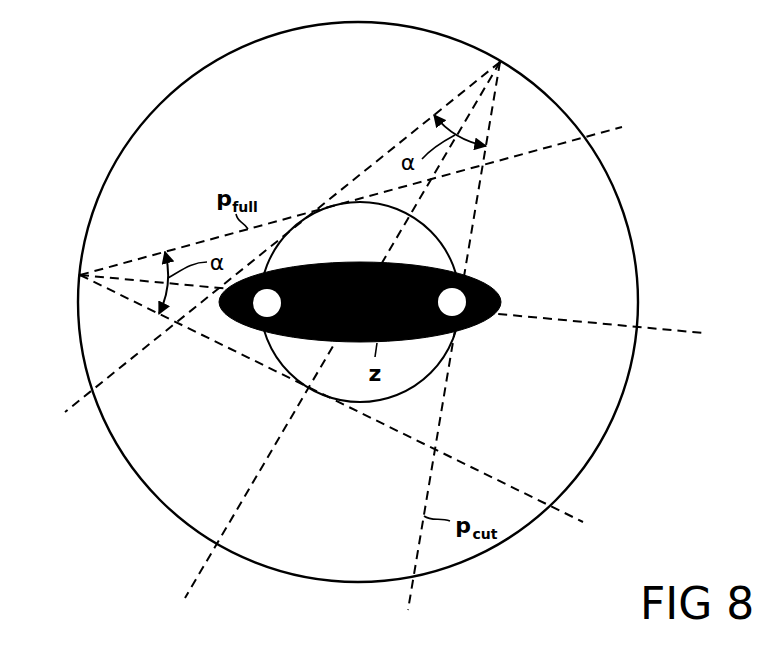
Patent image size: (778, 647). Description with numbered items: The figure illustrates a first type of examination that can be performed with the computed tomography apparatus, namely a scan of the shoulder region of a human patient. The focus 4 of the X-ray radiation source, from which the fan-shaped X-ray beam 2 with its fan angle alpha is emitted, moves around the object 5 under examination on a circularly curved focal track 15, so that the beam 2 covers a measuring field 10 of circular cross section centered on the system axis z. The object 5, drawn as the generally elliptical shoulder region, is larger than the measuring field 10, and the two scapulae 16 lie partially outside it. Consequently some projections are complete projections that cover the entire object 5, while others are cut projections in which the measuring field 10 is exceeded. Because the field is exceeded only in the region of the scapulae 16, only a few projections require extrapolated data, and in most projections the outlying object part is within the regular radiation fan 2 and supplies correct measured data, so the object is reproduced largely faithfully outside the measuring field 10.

The focal track 15 is at (158, 105).
The focus 4 is at (500, 62).
The X-ray beam 2 is at (527, 154).
The object 5 is at (486, 282).
The scapula 16 is at (265, 318).
The measuring field 10 is at (418, 383).